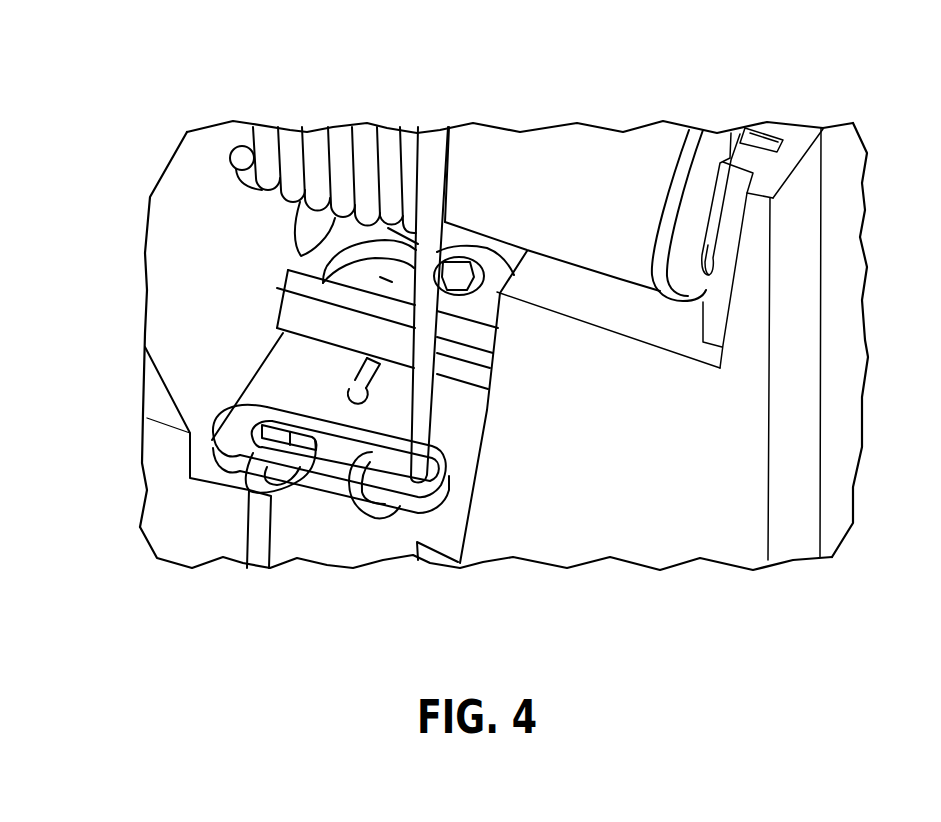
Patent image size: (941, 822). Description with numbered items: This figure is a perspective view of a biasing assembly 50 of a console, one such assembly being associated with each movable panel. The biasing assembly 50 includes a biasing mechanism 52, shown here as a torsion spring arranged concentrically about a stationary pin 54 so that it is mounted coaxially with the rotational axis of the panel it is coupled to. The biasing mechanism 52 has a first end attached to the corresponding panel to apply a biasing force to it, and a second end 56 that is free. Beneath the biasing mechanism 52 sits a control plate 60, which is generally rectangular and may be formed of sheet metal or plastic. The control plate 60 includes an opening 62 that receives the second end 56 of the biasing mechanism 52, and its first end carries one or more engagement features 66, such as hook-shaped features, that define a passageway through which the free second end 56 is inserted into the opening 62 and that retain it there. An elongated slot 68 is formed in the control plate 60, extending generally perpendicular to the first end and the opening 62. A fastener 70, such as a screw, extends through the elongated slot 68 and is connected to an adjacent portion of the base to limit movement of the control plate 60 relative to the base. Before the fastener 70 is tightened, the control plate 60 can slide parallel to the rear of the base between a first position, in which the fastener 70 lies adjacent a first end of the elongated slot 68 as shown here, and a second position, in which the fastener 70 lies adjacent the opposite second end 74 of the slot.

The biasing assembly 50 is at (197, 105).
The biasing mechanism 52 is at (339, 158).
The pin 54 is at (563, 167).
The second end 56 is at (420, 425).
The control plate 60 is at (300, 350).
The opening 62 is at (281, 437).
The engagement feature 66 is at (312, 450).
The elongated slot 68 is at (380, 377).
The fastener 70 is at (383, 278).
The second end of the slot 74 is at (350, 388).